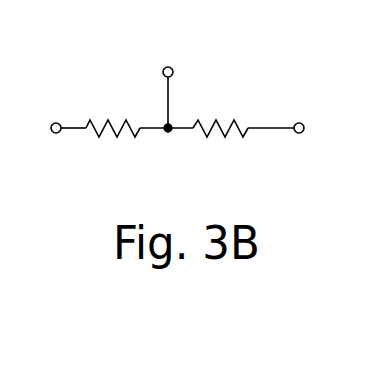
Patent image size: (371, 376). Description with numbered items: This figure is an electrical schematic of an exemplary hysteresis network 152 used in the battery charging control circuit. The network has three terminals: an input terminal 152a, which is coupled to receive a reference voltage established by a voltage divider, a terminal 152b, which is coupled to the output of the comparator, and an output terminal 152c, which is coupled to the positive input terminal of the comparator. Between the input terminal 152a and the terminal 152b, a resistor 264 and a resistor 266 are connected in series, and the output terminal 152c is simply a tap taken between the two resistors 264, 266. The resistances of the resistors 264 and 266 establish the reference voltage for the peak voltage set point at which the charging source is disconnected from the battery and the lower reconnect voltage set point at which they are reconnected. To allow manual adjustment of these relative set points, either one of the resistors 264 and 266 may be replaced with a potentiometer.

The hysteresis network 152 is at (203, 22).
The input terminal 152a is at (62, 124).
The terminal 152b is at (298, 134).
The output terminal 152c is at (174, 75).
The resistor 264 is at (92, 133).
The resistor 266 is at (237, 135).